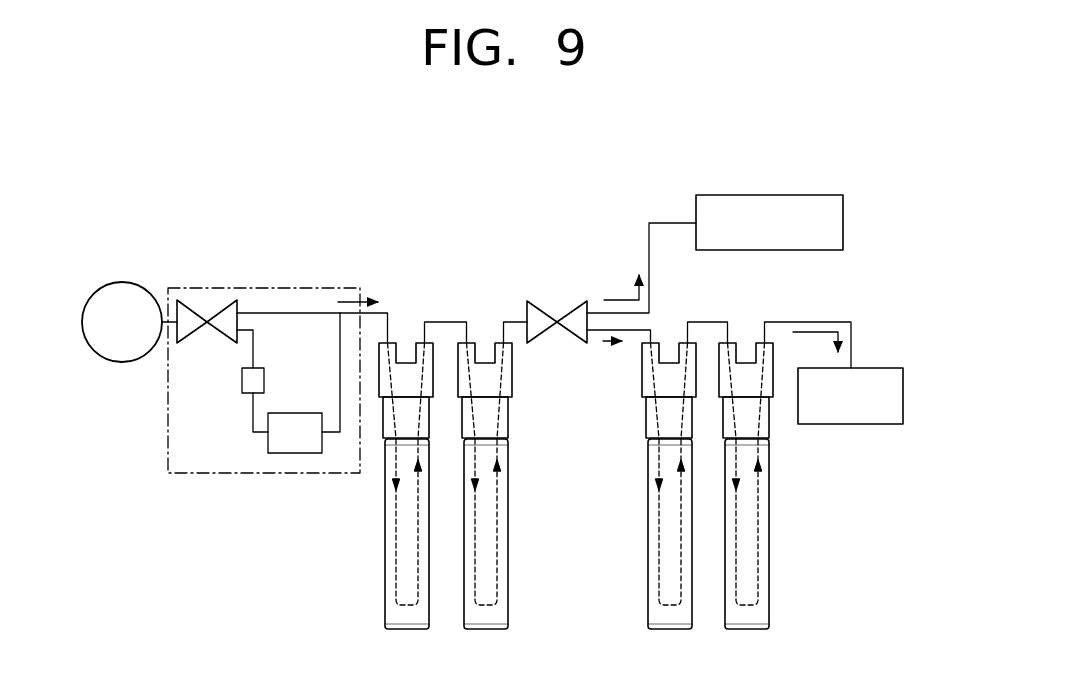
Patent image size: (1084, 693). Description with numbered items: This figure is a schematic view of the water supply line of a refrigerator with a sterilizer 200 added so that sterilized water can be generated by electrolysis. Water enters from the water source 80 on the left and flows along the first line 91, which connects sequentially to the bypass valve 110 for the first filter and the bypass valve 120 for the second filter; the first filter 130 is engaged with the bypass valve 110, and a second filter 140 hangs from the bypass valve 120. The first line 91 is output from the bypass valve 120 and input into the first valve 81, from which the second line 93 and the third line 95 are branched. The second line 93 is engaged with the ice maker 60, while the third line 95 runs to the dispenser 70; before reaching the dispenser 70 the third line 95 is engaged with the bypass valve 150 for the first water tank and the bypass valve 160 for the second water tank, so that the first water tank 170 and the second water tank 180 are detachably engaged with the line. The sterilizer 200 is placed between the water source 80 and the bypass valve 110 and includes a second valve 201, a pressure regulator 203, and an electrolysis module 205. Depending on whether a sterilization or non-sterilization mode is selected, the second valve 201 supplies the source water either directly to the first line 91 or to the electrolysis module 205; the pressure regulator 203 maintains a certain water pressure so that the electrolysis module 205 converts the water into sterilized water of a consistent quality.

The ice maker 60 is at (818, 194).
The dispenser 70 is at (880, 367).
The water source 80 is at (123, 280).
The first valve 81 is at (545, 303).
The first line 91 is at (320, 312).
The second line 93 is at (595, 305).
The third line 95 is at (623, 325).
The bypass valve for the first filter 110 is at (380, 424).
The bypass valve for the second filter 120 is at (517, 404).
The first filter 130 is at (386, 592).
The second filter body 140 is at (505, 592).
The bypass valve for the first water tank 150 is at (640, 425).
The bypass valve for the second water tank 160 is at (779, 424).
The first water tank 170 is at (647, 592).
The second water tank 180 is at (768, 592).
The sterilizer 200 is at (203, 477).
The second valve 201 is at (193, 306).
The pressure regulator 203 is at (241, 377).
The electrolysis module 205 is at (280, 452).